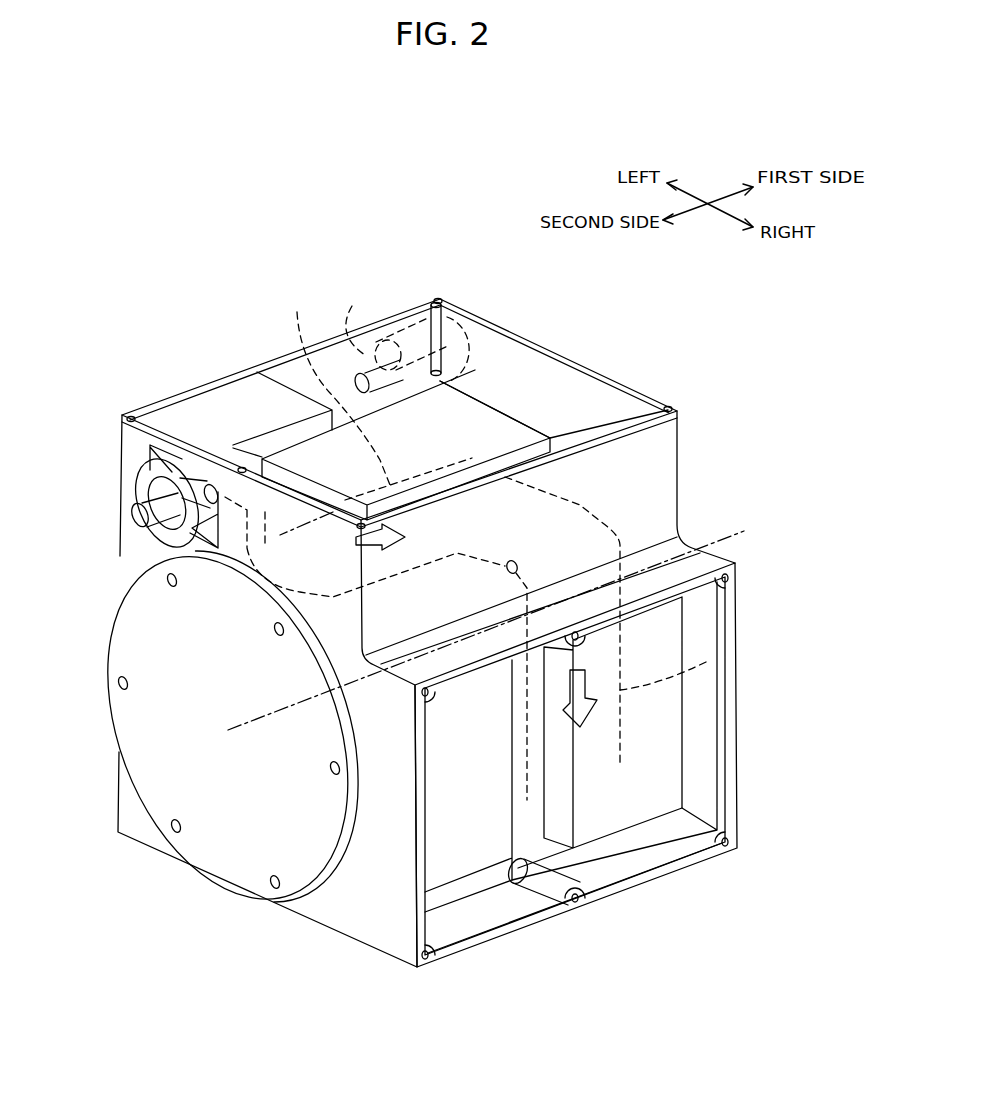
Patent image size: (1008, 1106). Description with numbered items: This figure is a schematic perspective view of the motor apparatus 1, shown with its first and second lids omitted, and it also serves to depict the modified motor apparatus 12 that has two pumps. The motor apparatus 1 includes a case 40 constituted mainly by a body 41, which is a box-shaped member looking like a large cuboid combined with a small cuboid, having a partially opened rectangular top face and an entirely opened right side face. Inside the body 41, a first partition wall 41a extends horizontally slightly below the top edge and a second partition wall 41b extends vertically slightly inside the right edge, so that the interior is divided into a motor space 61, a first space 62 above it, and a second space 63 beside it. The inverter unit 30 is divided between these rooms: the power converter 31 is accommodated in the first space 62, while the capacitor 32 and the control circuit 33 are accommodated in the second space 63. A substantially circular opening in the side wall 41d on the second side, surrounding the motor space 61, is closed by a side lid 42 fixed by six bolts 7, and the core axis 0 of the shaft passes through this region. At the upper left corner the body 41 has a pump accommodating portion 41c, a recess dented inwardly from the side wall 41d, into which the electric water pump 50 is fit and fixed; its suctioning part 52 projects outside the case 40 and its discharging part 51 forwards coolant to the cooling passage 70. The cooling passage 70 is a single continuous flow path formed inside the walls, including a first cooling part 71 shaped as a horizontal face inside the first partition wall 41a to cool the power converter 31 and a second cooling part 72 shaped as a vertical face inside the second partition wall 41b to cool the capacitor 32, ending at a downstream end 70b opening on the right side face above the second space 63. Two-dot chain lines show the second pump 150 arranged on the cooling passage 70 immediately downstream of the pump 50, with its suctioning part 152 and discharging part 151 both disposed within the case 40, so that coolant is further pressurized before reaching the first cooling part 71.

The motor apparatus 1 is at (464, 267).
The motor apparatus 12 is at (507, 211).
The bolt 7 is at (170, 840).
The core axis 0 is at (493, 625).
The inverter unit 30 is at (495, 645).
The power converter 31 is at (503, 425).
The capacitor 32 is at (650, 780).
The control circuit 33 is at (478, 860).
The case 40 is at (465, 646).
The body 41 is at (465, 646).
The first partition wall 41a is at (558, 438).
The second partition wall 41b is at (585, 850).
The pump accommodating portion 41c is at (228, 395).
The side wall 41d is at (365, 930).
The side lid 42 is at (232, 728).
The pump 50 is at (137, 448).
The discharging part 51 is at (183, 482).
The suctioning part 52 is at (135, 520).
The motor space 61 is at (148, 660).
The first space 62 is at (511, 343).
The second space 63 is at (711, 738).
The cooling passage 70 is at (481, 615).
The downstream end 70b is at (545, 669).
The first cooling part 71 is at (378, 393).
The second cooling part 72 is at (705, 668).
The pump 150 is at (386, 311).
The discharging part 151 is at (415, 320).
The suctioning part 152 is at (348, 319).